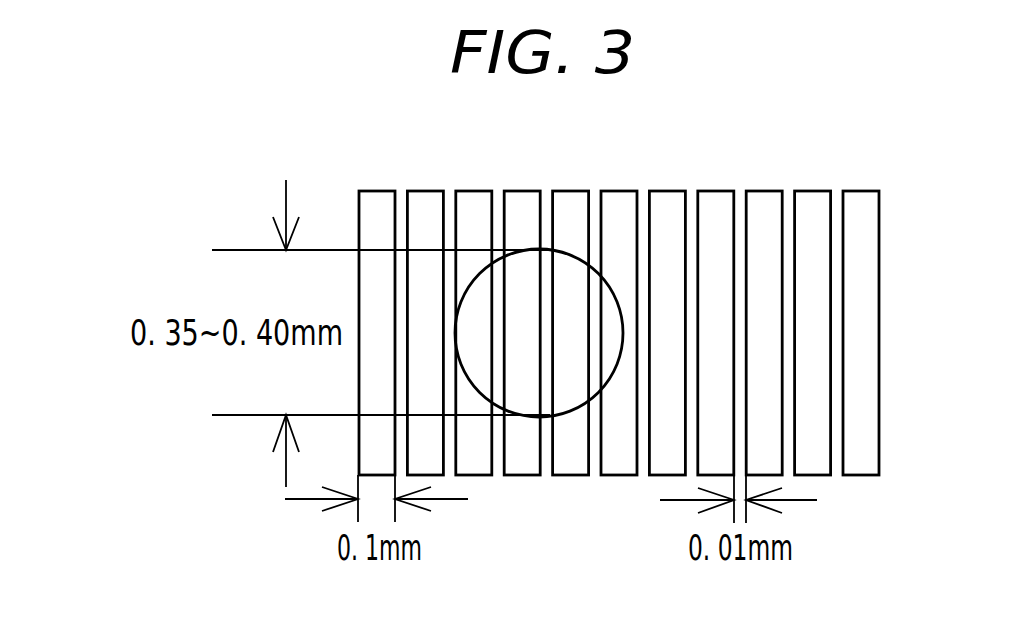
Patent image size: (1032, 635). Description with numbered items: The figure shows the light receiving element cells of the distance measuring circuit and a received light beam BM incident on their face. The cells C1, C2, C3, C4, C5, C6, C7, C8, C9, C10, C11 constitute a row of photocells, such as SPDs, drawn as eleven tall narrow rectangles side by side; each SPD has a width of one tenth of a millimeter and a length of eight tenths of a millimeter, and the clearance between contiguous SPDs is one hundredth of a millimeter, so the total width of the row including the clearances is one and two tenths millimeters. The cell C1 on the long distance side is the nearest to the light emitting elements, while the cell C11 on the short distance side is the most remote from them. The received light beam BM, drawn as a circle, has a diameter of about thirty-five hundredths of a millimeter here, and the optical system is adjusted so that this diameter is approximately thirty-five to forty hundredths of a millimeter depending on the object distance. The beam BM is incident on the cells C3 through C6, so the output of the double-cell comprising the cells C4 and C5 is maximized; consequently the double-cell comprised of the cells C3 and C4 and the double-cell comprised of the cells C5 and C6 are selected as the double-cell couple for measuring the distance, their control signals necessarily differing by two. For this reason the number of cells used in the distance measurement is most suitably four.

The cell C1 is at (379, 191).
The cell C2 is at (427, 191).
The cell C3 is at (476, 191).
The cell C4 is at (524, 191).
The cell C5 is at (572, 191).
The cell C6 is at (621, 191).
The cell C7 is at (669, 191).
The cell C8 is at (718, 191).
The cell C9 is at (766, 191).
The cell C10 is at (814, 191).
The cell C11 is at (862, 191).
The received light beam BM is at (525, 416).